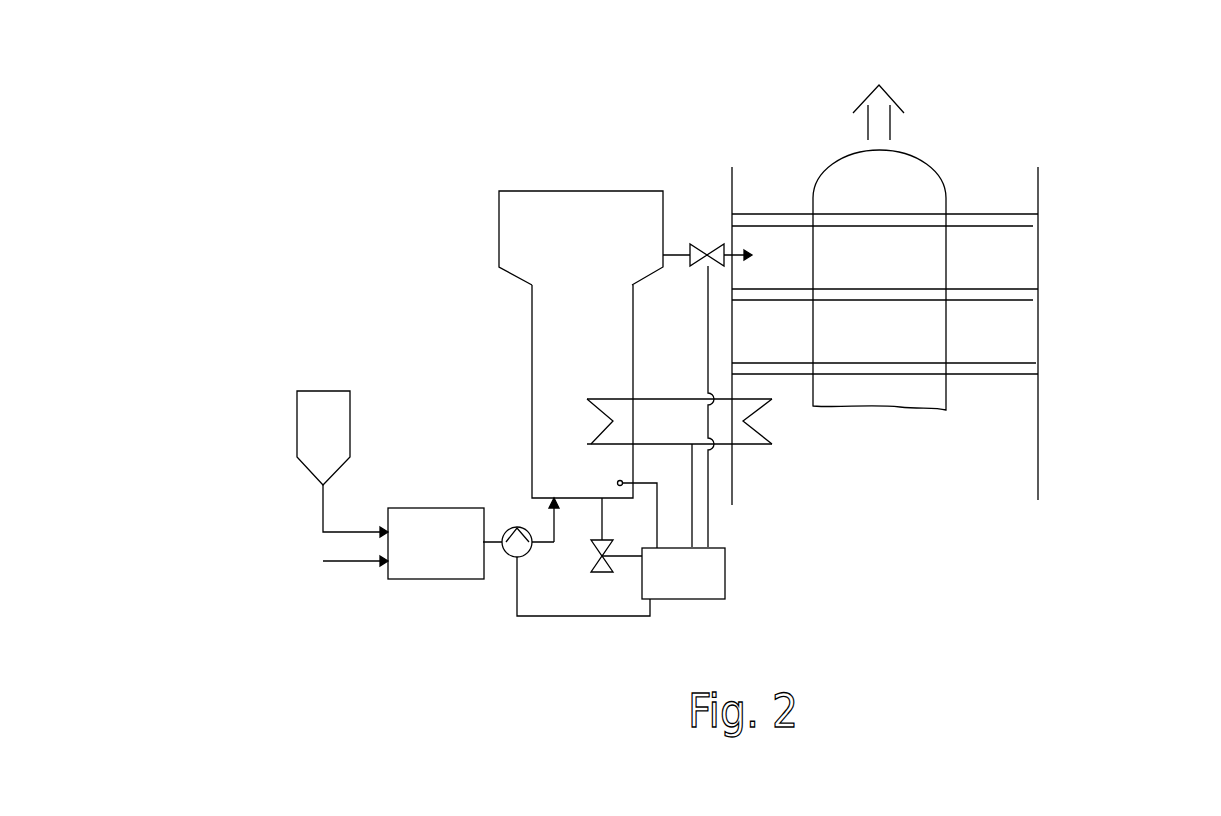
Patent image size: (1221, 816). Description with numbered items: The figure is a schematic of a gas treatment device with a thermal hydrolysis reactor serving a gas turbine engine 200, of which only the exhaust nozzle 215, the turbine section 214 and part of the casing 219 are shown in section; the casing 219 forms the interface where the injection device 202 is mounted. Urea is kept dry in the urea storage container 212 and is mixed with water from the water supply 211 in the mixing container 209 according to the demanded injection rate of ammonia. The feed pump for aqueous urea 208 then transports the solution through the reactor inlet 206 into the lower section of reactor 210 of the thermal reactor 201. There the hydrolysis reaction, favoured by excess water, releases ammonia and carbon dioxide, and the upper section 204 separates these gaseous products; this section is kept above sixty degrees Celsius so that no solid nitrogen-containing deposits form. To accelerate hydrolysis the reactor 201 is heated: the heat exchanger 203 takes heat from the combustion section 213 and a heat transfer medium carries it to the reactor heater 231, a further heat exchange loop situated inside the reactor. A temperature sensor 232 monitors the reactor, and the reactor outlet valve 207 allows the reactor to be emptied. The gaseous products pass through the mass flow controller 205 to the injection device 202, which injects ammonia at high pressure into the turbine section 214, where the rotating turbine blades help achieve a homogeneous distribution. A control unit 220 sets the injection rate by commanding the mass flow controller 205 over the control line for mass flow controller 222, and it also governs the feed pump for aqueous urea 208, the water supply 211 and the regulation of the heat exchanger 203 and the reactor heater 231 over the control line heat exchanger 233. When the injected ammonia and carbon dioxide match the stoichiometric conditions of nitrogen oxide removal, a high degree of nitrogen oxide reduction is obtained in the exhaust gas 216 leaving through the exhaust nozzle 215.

The gas turbine engine 200 is at (1109, 146).
The thermal reactor 201 is at (532, 283).
The injection device 202 is at (752, 253).
The heat exchanger 203 is at (747, 388).
The upper section 204 is at (558, 208).
The mass flow controller 205 is at (708, 243).
The reactor inlet 206 is at (552, 507).
The reactor outlet valve 207 is at (600, 575).
The feed pump for aqueous urea 208 is at (516, 558).
The mixing container 209 is at (447, 557).
The lower section of reactor 210 is at (557, 447).
The water supply 211 is at (299, 564).
The urea storage container 212 is at (310, 412).
The combustion section 213 is at (879, 321).
The turbine section 214 is at (1033, 226).
The exhaust nozzle 215 is at (910, 188).
The exhaust gas 216 is at (890, 132).
The casing 219 is at (1038, 443).
The control unit 220 is at (713, 587).
The control line for mass flow controller 222 is at (710, 537).
The reactor heater 231 is at (612, 397).
The temperature sensor 232 is at (618, 483).
The control line heat exchanger 233 is at (693, 480).